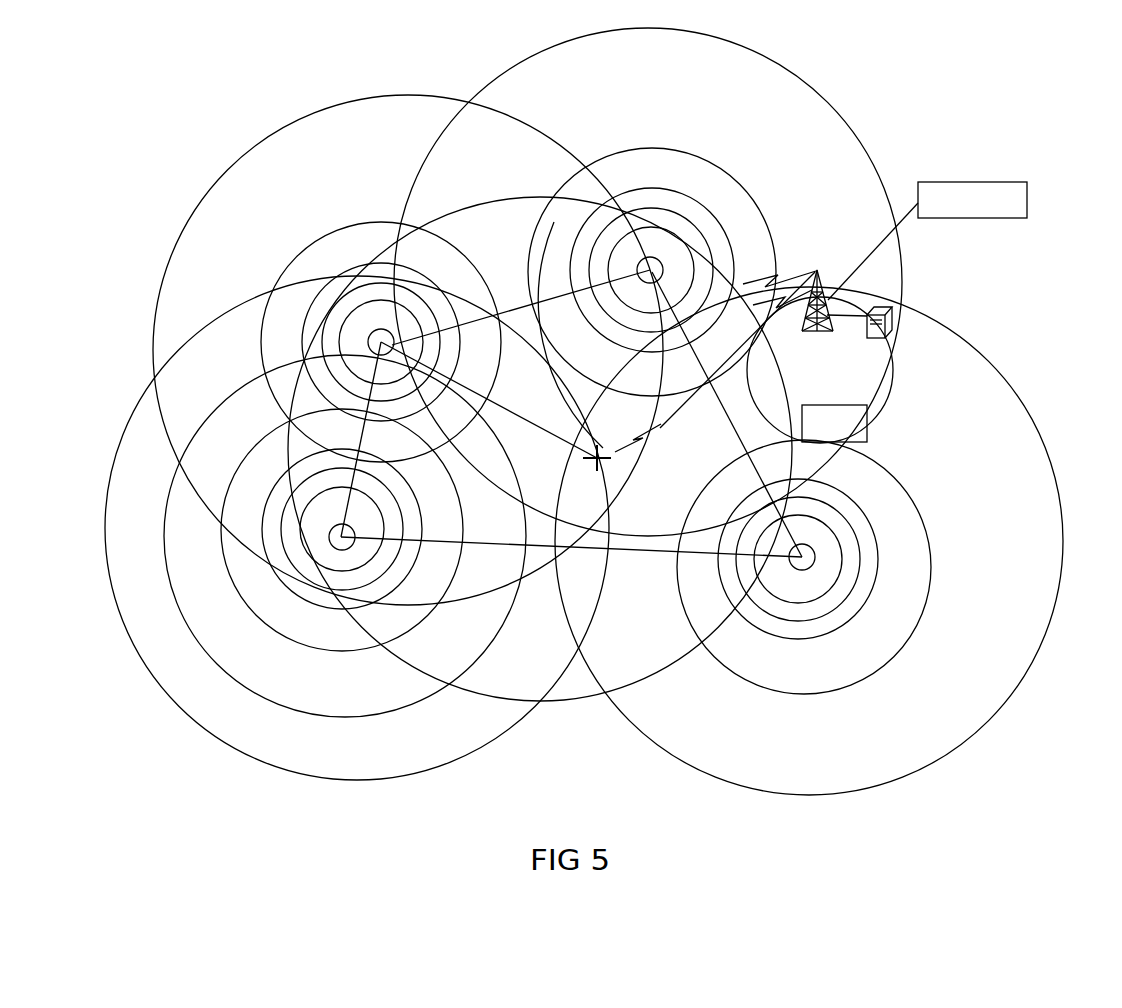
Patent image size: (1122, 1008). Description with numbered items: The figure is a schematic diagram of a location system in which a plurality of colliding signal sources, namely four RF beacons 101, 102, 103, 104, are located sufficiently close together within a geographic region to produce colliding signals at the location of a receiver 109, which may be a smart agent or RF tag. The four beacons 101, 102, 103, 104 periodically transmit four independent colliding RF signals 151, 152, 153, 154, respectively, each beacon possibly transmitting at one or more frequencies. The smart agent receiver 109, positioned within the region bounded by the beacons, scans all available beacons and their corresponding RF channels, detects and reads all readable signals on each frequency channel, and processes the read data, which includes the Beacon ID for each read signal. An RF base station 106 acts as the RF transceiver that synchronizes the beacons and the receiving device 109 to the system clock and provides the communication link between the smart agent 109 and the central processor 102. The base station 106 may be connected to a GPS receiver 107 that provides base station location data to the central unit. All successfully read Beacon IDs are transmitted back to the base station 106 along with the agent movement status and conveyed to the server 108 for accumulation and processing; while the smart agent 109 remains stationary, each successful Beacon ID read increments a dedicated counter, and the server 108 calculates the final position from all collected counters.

The beacon 101 is at (332, 548).
The central processor 102 is at (372, 337).
The beacon 103 is at (661, 262).
The beacon 104 is at (809, 569).
The RF base station 106 is at (819, 268).
The GPS receiver 107 is at (868, 423).
The server 108 is at (1030, 200).
The smart agent receiver 109 is at (605, 440).
The colliding RF signal 151 is at (597, 622).
The colliding RF signal 152 is at (626, 487).
The colliding RF signal 153 is at (513, 489).
The colliding RF signal 154 is at (578, 437).